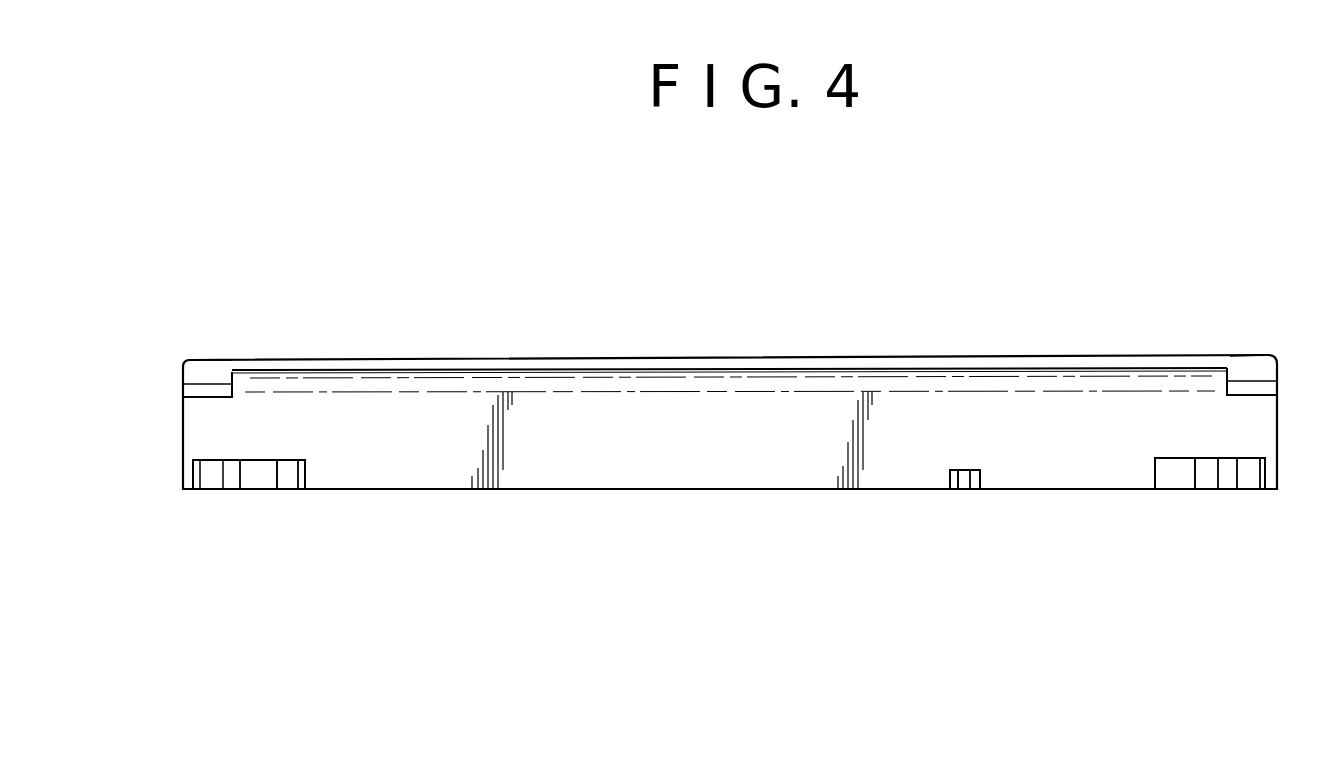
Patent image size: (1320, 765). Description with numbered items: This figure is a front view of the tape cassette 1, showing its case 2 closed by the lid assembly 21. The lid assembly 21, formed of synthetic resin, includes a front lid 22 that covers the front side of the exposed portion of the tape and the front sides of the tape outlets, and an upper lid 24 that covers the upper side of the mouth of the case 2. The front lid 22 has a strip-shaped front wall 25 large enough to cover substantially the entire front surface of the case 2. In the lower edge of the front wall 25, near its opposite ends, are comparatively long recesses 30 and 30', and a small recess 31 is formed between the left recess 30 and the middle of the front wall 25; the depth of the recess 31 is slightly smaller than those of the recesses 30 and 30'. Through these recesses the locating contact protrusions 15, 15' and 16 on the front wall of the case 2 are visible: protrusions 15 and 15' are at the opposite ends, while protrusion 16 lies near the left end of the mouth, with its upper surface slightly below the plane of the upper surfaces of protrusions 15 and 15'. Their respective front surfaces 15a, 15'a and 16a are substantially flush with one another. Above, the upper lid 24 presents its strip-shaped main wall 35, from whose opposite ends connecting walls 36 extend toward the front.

The tape cassette 1 is at (1130, 304).
The case 2 is at (1250, 488).
The locating contact protrusion 15 is at (1217, 516).
The front surface 15a is at (1172, 488).
The locating contact protrusion 15' is at (306, 517).
The front surface 15'a is at (238, 517).
The locating contact protrusion 16 is at (960, 489).
The front surface 16a is at (966, 489).
The lid assembly 21 is at (743, 470).
The front lid 22 is at (650, 470).
The upper lid 24 is at (700, 358).
The front wall 25 is at (558, 470).
The recess 30 is at (1210, 447).
The recess 30' is at (253, 447).
The small recess 31 is at (965, 468).
The main wall 35 is at (832, 362).
The connecting wall 36 is at (205, 373).